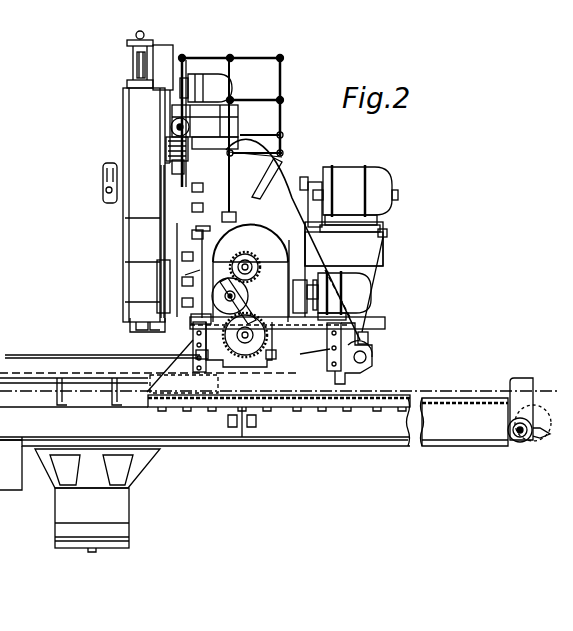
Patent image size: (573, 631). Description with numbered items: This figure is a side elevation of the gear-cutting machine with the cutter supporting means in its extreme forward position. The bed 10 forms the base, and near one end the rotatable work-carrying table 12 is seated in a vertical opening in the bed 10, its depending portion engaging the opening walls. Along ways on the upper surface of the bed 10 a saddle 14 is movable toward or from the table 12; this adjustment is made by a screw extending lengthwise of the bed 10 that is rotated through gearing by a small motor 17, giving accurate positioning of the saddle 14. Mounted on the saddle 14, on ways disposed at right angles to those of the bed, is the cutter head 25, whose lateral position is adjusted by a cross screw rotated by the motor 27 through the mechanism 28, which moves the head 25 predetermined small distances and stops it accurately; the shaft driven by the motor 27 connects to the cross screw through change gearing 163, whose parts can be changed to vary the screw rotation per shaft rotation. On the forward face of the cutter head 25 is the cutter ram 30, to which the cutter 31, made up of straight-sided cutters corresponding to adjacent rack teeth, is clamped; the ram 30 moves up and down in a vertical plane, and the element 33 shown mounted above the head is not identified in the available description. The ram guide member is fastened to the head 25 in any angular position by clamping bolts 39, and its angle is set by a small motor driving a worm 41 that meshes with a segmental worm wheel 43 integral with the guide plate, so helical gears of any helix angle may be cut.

The bed 10 is at (200, 75).
The work-carrying table 12 is at (10, 356).
The saddle 14 is at (367, 338).
The small motor 17 is at (536, 440).
The cutter head 25 is at (312, 257).
The motor 27 is at (355, 288).
The mechanism 28 is at (290, 266).
The cutter ram 30 is at (111, 202).
The cutter 31 is at (103, 190).
The motor 33 is at (352, 172).
The clamping bolts 39 is at (160, 215).
The worm 41 is at (170, 127).
The segmental worm wheel 43 is at (166, 154).
The change gearing 163 is at (250, 283).